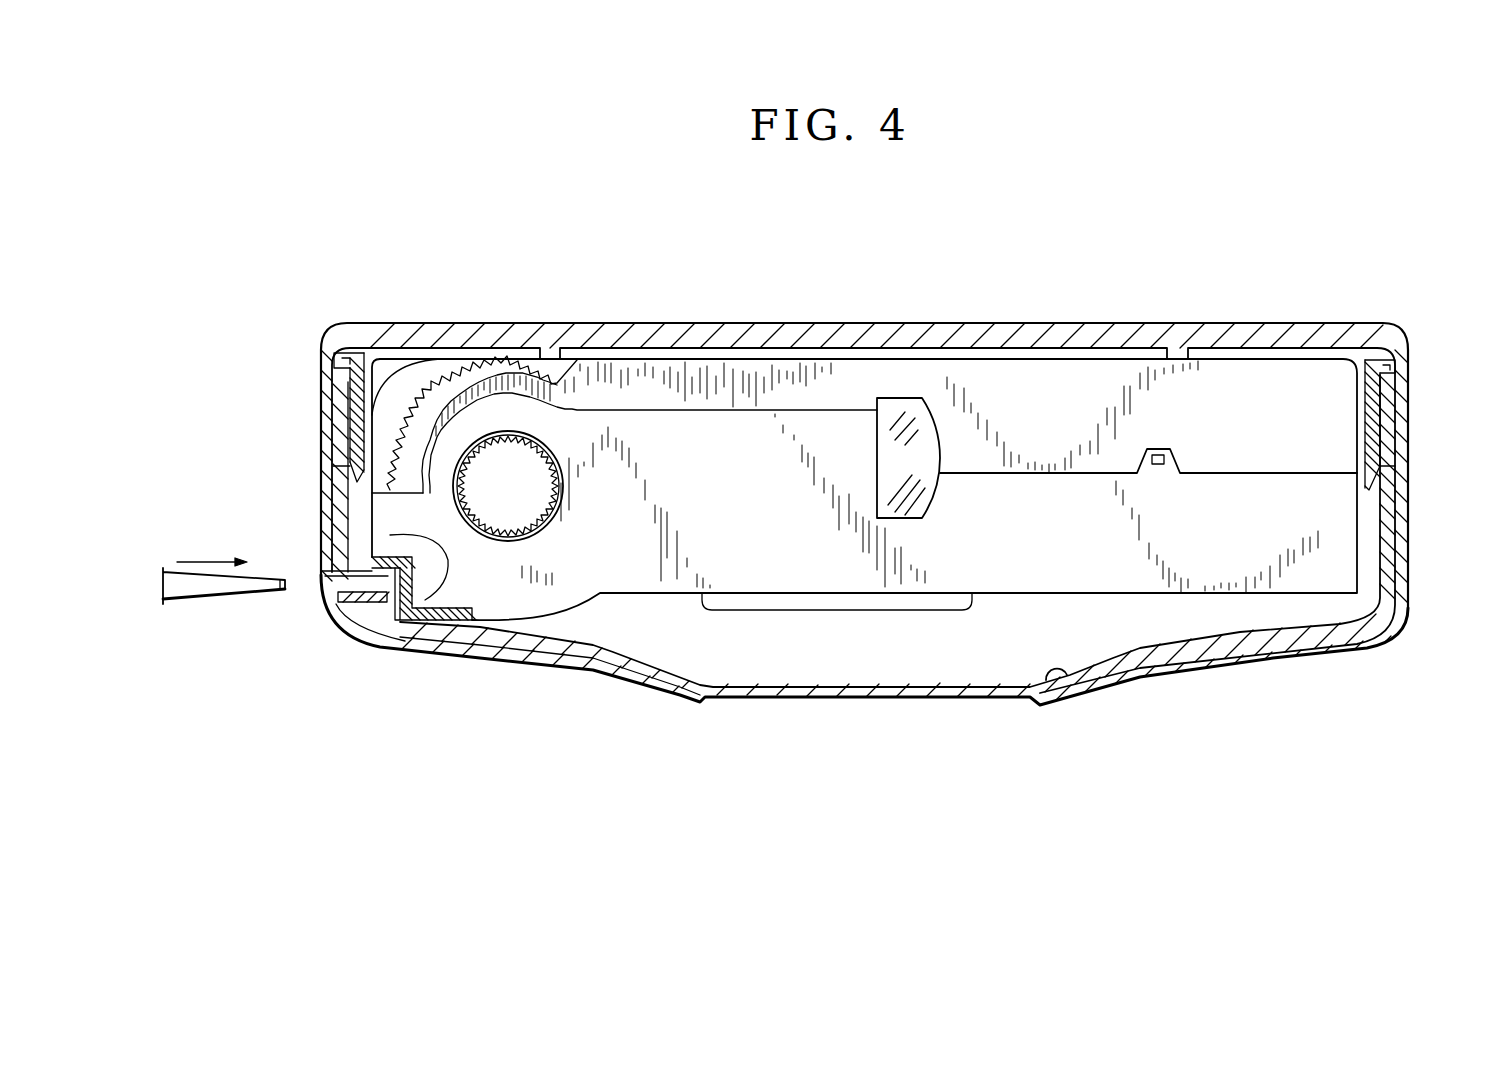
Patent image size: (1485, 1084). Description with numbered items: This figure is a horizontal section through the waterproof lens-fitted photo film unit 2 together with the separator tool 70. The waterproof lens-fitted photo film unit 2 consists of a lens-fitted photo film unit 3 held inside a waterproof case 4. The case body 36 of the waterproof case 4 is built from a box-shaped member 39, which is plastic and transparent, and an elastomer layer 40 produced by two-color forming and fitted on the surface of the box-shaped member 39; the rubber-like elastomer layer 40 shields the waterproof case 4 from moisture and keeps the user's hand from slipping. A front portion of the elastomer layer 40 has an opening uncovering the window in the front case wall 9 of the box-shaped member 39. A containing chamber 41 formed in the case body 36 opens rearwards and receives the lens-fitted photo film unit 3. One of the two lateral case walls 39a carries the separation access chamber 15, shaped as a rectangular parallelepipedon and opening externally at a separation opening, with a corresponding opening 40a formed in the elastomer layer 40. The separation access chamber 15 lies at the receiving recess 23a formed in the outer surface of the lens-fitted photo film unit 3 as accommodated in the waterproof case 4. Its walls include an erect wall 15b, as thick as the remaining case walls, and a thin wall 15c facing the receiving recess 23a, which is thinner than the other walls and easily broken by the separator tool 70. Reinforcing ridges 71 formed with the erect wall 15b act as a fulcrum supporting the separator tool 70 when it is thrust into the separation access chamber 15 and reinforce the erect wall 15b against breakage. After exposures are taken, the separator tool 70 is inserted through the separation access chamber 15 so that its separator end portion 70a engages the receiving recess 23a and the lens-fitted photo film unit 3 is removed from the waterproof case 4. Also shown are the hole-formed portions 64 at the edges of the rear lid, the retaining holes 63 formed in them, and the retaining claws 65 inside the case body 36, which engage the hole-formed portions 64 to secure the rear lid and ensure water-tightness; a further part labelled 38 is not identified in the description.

The waterproof lens-fitted photo film unit 2 is at (756, 262).
The lens-fitted photo film unit 3 is at (901, 332).
The waterproof case 4 is at (470, 296).
The front case wall 9 is at (845, 698).
The separation access chamber 15 is at (393, 642).
The erect wall 15b is at (366, 630).
The thin wall 15c is at (377, 533).
The receiving recess 23a is at (445, 620).
The case body 36 is at (527, 744).
The hook 38 is at (338, 352).
The box-shaped member 39 is at (596, 657).
The lateral case walls 39a is at (333, 497).
The elastomer layer 40 is at (545, 662).
The opening 40a is at (322, 580).
The containing chamber 41 is at (1040, 683).
The retaining holes 63 is at (358, 476).
The hole-formed portions 64 is at (357, 352).
The retaining claws 65 is at (352, 466).
The separator tool 70 is at (198, 600).
The separator end portion 70a is at (268, 595).
The reinforcing ridges 71 is at (329, 624).